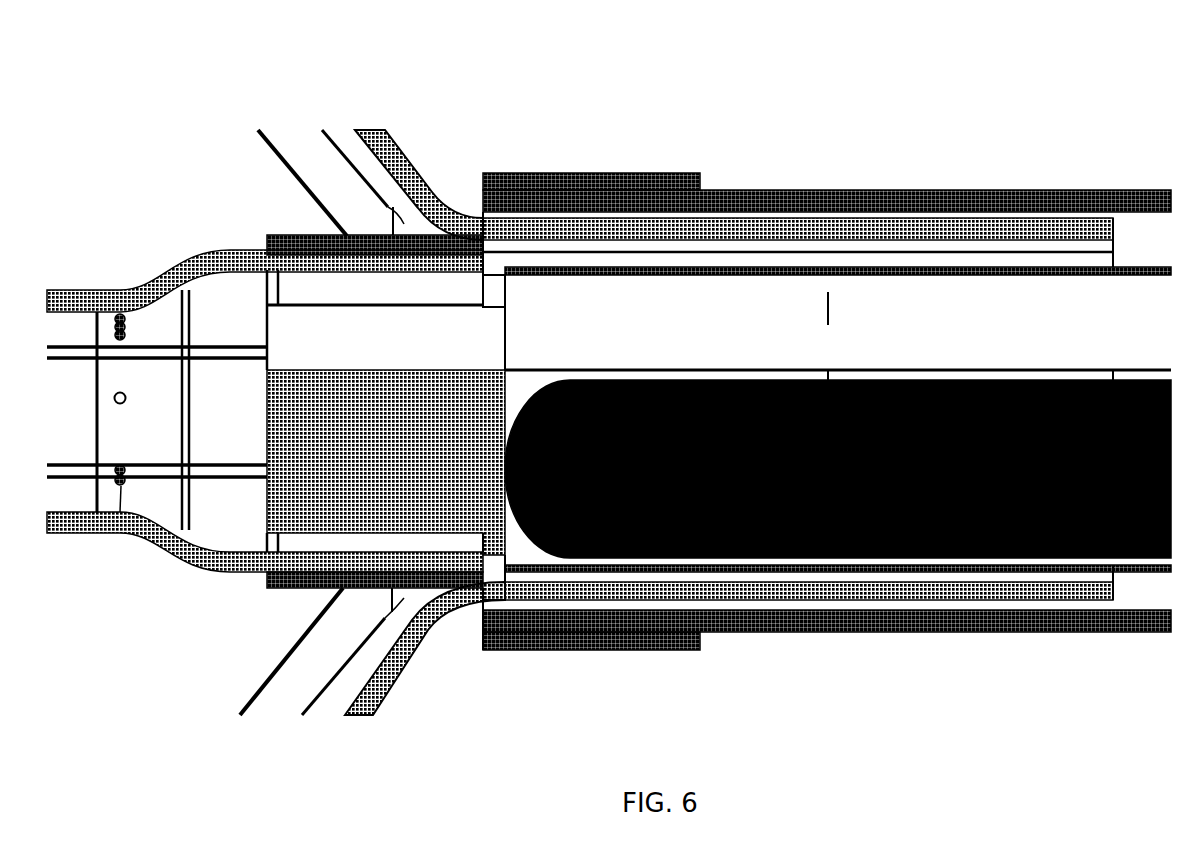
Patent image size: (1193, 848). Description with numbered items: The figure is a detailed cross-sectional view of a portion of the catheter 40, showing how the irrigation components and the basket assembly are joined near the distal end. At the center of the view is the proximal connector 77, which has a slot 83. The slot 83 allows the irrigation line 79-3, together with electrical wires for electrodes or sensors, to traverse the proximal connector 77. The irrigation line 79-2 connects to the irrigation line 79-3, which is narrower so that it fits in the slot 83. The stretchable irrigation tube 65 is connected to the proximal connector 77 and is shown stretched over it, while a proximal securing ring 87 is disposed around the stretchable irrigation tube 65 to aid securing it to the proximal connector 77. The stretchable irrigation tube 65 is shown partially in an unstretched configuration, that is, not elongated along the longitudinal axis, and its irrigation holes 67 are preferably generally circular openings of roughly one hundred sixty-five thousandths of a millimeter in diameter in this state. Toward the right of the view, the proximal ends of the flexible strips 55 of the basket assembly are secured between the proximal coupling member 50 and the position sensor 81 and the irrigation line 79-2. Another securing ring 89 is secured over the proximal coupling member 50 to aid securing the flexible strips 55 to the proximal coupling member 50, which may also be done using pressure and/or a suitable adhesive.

The catheter 40 is at (118, 121).
The proximal coupling member 50 is at (872, 636).
The flexible strips 55 is at (398, 150).
The stretchable irrigation tube 65 is at (62, 297).
The irrigation holes 67 is at (122, 392).
The proximal connector 77 is at (300, 505).
The irrigation line 79-2 is at (888, 292).
The irrigation line 79-3 is at (298, 330).
The position sensor 81 is at (1140, 558).
The slot 83 is at (442, 236).
The proximal securing ring 87 is at (298, 590).
The securing ring 89 is at (565, 173).